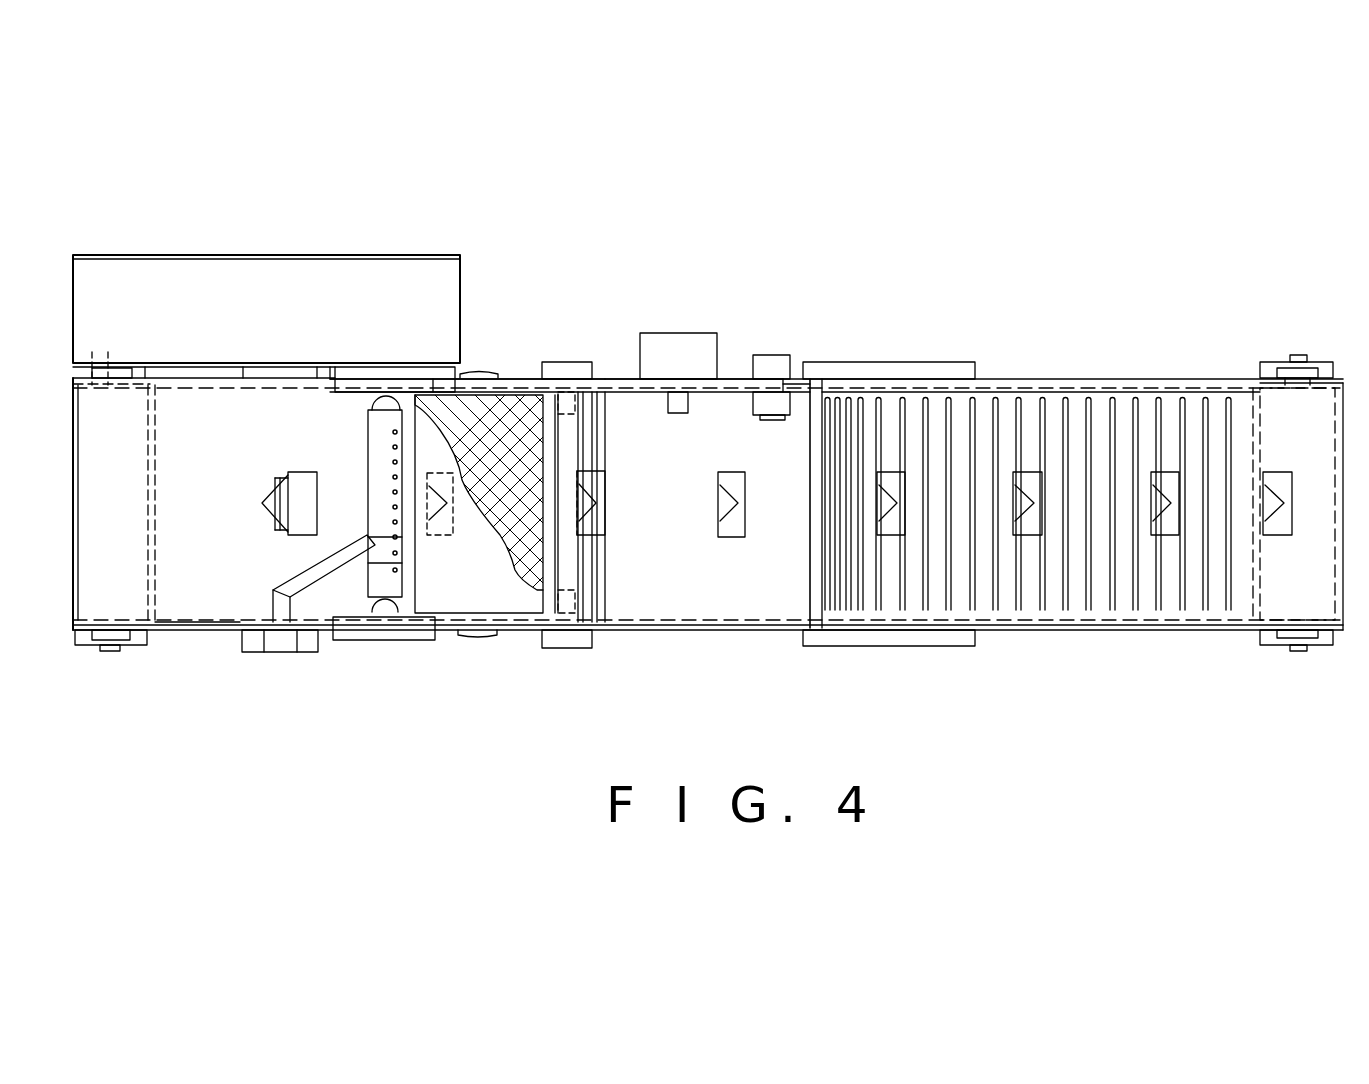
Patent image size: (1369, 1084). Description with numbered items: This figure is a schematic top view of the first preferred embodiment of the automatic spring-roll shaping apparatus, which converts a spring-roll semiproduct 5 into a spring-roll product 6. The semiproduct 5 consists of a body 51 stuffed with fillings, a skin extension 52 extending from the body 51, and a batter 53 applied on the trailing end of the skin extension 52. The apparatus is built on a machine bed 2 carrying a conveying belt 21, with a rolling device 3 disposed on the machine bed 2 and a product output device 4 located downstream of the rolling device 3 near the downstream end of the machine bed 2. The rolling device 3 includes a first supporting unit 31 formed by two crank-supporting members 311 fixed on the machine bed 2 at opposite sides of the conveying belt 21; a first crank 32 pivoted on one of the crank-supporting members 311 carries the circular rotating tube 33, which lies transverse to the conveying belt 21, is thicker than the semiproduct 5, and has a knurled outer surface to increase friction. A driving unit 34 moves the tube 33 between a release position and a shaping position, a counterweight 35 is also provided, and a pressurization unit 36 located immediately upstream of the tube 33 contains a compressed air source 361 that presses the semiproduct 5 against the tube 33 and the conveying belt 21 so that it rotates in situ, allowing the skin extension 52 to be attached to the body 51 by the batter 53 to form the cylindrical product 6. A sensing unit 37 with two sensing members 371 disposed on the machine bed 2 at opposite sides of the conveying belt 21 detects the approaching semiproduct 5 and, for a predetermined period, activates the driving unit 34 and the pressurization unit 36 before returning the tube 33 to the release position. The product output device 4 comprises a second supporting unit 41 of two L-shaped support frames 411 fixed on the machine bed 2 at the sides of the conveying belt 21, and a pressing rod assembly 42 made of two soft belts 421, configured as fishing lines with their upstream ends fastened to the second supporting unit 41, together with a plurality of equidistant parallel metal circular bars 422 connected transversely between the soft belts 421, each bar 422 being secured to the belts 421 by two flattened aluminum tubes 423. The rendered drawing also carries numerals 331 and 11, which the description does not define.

The machine bed 2 is at (168, 648).
The conveying belt 21 is at (210, 620).
The rolling device 3 is at (528, 312).
The first supporting unit 31 is at (578, 385).
The crank-supporting member 311 is at (557, 372).
The first crank 32 is at (617, 385).
The circular rotating tube 33 is at (480, 500).
The mesh 331 is at (510, 420).
The driving unit 34 is at (702, 355).
The counterweight 35 is at (778, 363).
The pressurization unit 36 is at (368, 404).
The compressed air source 361 is at (392, 398).
The sensing unit 37 is at (343, 650).
The sensing member 371 is at (420, 372).
The product output device 4 is at (1073, 467).
The second supporting unit 41 is at (928, 358).
The L-shaped support frame 411 is at (917, 360).
The pressing rod assembly 42 is at (1036, 497).
The soft belt 421 is at (1125, 405).
The circular bar 422 is at (1137, 402).
The aluminum tube 423 is at (1205, 405).
The base rail 11 is at (1170, 635).
The spring-roll semiproduct 5 is at (273, 511).
The body 51 is at (306, 488).
The skin extension 52 is at (262, 492).
The batter 53 is at (262, 530).
The spring-roll product 6 is at (440, 530).